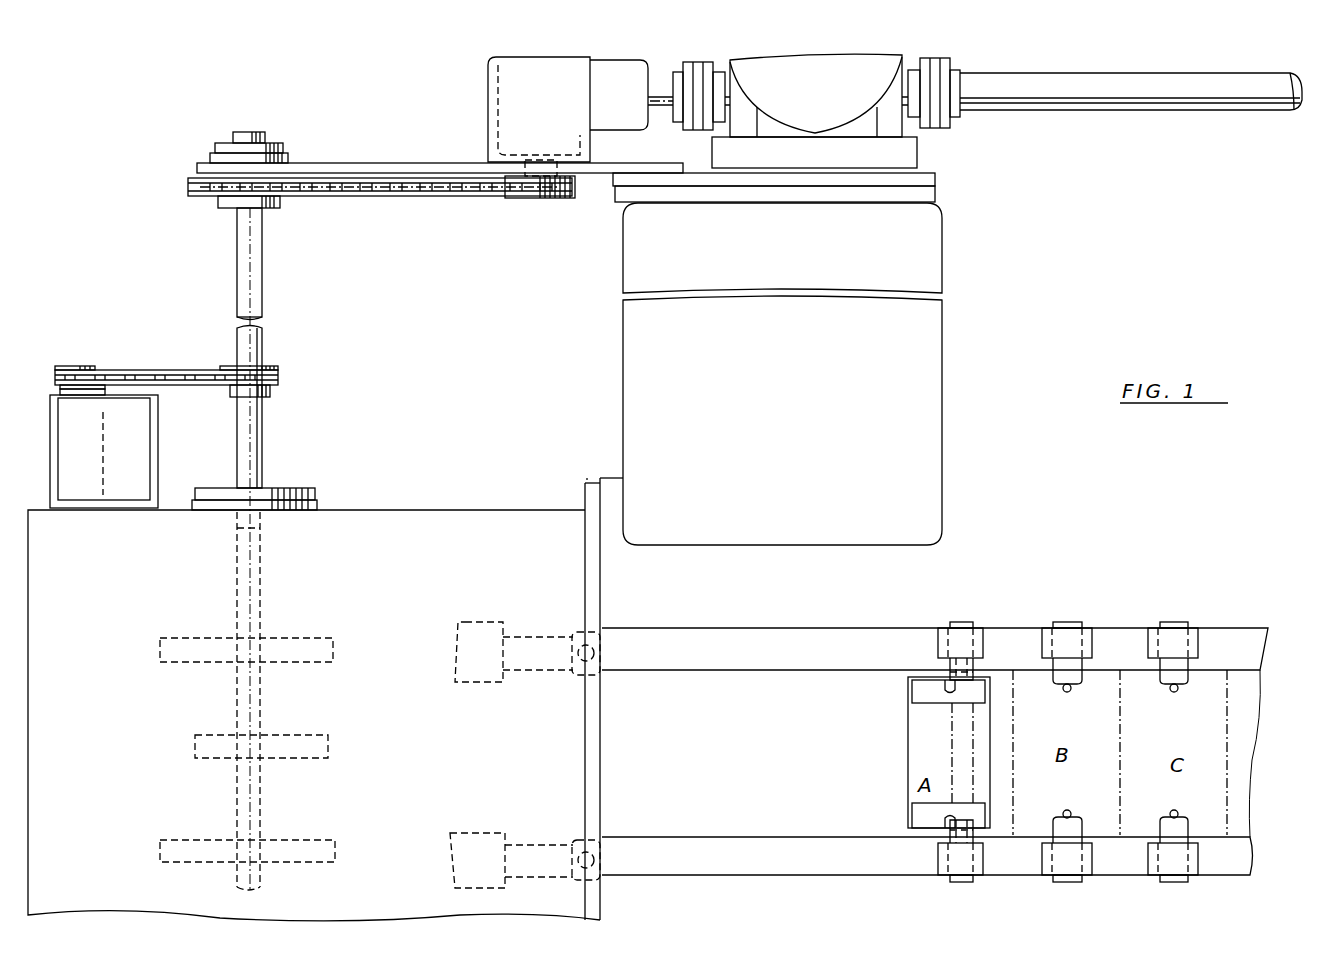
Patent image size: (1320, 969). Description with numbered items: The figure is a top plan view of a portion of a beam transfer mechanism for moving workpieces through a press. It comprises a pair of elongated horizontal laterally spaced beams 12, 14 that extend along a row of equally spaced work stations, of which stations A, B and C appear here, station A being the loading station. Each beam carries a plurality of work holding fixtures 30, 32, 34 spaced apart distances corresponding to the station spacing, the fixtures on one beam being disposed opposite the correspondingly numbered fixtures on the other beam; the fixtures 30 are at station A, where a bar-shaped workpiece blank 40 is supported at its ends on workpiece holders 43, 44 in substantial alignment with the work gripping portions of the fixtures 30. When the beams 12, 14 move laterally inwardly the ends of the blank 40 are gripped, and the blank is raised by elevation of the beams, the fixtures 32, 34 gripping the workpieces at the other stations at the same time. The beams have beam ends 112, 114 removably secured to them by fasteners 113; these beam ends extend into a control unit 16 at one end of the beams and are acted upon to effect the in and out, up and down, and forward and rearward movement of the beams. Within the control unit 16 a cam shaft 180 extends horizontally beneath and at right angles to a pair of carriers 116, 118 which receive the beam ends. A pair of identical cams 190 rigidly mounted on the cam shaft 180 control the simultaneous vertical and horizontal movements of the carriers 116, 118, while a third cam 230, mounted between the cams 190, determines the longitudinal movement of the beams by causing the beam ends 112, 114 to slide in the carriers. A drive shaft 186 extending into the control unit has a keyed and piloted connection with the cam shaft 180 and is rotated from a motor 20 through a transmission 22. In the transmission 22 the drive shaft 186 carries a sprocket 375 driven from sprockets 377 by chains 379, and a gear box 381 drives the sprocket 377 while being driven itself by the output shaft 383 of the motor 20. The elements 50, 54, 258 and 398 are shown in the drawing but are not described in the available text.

The beam 12 is at (755, 628).
The beam 14 is at (740, 837).
The control unit 16 is at (84, 679).
The motor 20 is at (828, 85).
The transmission 22 is at (182, 175).
The work holding fixture 30 is at (982, 628).
The work holding fixture 32 is at (1085, 628).
The work holding fixture 34 is at (1156, 628).
The workpiece blank 40 is at (950, 727).
The workpiece holder 43 is at (918, 693).
The workpiece holder 44 is at (918, 815).
The clamp body 50 is at (938, 645).
The clamp tab 54 is at (960, 622).
The beam end 112 is at (530, 630).
The fastener 113 is at (572, 676).
The beam end 114 is at (538, 852).
The carrier 116 is at (470, 632).
The carrier 118 is at (480, 835).
The cam shaft 180 is at (255, 604).
The drive shaft 186 is at (258, 478).
The cam 190 is at (200, 663).
The third cam 230 is at (328, 750).
The housing base 258 is at (733, 140).
The sprocket 375 is at (207, 200).
The sprocket 377 is at (522, 198).
The chain 379 is at (410, 195).
The gear box 381 is at (500, 128).
The output shaft 383 is at (664, 108).
The rod 398 is at (1060, 110).